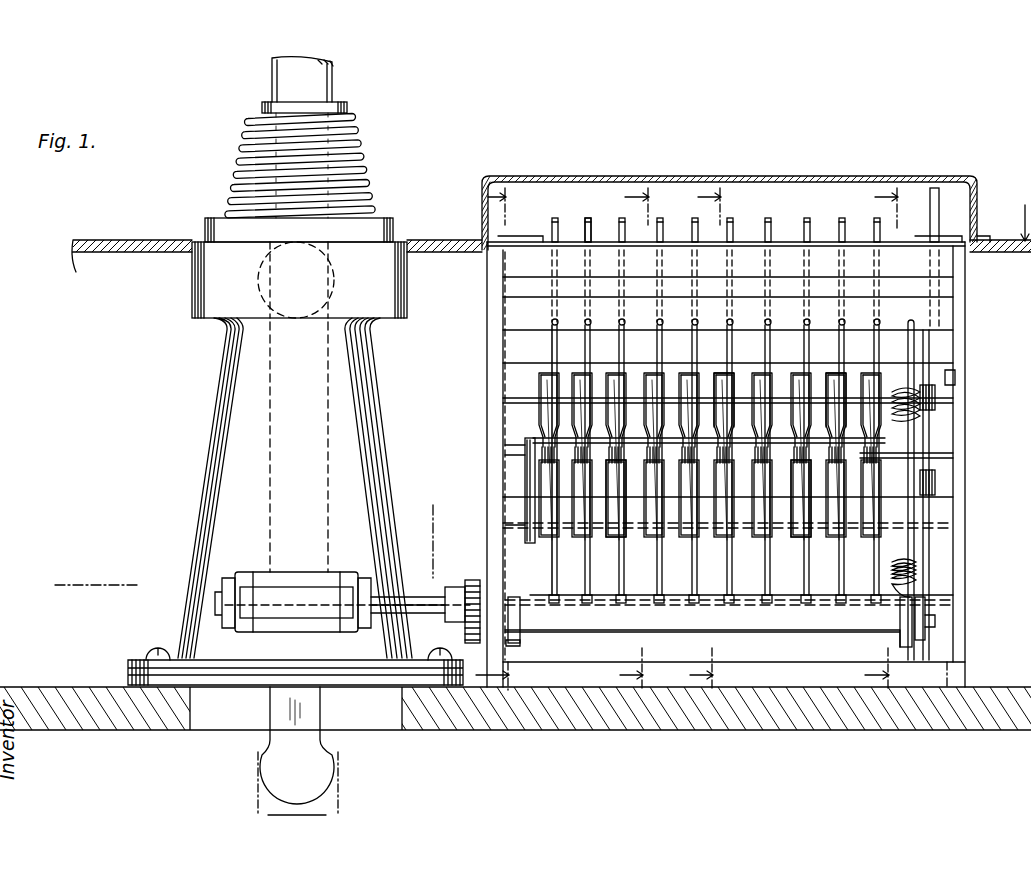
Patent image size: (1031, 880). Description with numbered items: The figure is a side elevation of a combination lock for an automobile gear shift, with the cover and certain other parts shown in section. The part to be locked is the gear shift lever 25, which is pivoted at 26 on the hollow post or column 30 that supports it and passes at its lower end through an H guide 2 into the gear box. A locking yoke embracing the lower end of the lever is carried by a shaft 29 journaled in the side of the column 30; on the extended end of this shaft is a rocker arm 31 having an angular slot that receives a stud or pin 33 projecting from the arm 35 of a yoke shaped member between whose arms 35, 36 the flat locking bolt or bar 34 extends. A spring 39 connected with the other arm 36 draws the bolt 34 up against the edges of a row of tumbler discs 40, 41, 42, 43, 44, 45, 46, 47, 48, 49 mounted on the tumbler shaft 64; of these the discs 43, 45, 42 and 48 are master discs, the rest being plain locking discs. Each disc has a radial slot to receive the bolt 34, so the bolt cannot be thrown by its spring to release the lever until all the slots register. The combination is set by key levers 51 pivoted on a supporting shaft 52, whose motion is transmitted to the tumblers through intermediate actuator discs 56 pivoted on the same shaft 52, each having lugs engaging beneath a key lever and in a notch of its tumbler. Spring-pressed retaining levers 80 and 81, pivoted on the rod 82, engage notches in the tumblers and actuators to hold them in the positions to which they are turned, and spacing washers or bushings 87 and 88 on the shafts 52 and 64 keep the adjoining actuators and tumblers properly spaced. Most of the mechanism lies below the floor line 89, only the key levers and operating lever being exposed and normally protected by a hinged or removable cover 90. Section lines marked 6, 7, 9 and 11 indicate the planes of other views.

The H guide 2 is at (97, 574).
The section line 6 is at (492, 439).
The section line 7 is at (634, 433).
The section line 9 is at (705, 433).
The section line 11 is at (906, 433).
The gear shift lever 25 is at (326, 84).
The pivot 26 is at (232, 316).
The shaft 29 is at (284, 572).
The hollow post or column 30 is at (205, 517).
The rocker arm 31 is at (465, 633).
The stud or pin 33 is at (486, 588).
The locking bolt or bar 34 is at (702, 642).
The arm 35 is at (520, 636).
The arm 36 is at (912, 647).
The spring 39 is at (918, 572).
The tumbler disc 40 is at (556, 563).
The tumbler disc 41 is at (589, 577).
The master tumbler disc 42 is at (623, 563).
The first master tumbler 43 is at (661, 577).
The tumbler disc 44 is at (696, 558).
The second master tumbler 45 is at (731, 577).
The tumbler disc 46 is at (769, 552).
The tumbler disc 47 is at (808, 577).
The master tumbler disc 48 is at (843, 552).
The tumbler disc 49 is at (878, 552).
The key lever 51 is at (588, 224).
The supporting shaft 52 is at (960, 379).
The actuator disc 56 is at (620, 347).
The tumbler shaft 64 is at (953, 506).
The retaining lever 80 is at (858, 490).
The retaining lever 81 is at (890, 420).
The rod 82 is at (935, 455).
The spacing washer or bushing 87 is at (740, 372).
The spacing washer or bushing 88 is at (630, 537).
The floor line 89 is at (140, 240).
The cover 90 is at (590, 180).